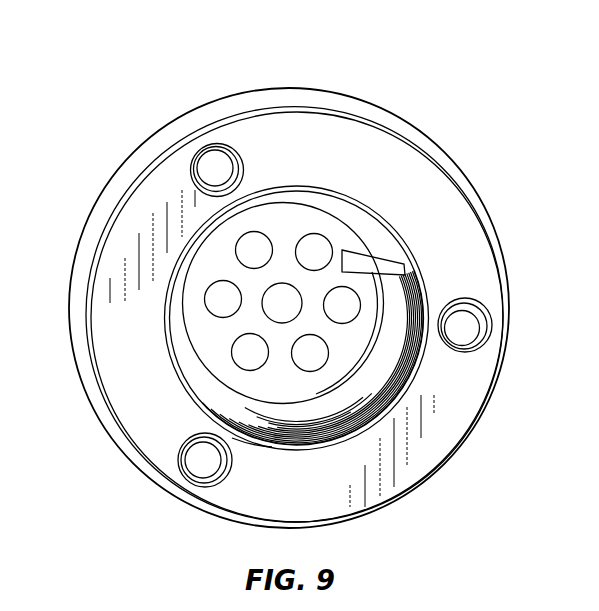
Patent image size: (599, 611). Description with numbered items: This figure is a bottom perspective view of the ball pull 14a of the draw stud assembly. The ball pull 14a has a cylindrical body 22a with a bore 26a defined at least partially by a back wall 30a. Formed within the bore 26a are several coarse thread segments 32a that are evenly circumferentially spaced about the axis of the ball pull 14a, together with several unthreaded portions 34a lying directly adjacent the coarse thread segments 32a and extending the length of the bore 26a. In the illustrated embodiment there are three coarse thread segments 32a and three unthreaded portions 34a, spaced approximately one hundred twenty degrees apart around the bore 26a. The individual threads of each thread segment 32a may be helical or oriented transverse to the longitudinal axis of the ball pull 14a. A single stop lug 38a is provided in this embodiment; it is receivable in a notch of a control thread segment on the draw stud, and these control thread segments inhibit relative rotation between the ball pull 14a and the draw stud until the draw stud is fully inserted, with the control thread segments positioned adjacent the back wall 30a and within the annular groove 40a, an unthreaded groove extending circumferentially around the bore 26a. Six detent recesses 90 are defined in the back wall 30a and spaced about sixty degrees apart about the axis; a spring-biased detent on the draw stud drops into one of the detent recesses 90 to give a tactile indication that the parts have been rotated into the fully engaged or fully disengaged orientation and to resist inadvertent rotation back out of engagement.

The ball pull 14a is at (181, 95).
The cylindrical body 22a is at (297, 98).
The bore 26a is at (422, 300).
The back wall 30a is at (217, 252).
The coarse thread segments 32a is at (350, 231).
The unthreaded portions 34a is at (251, 443).
The stop lug 38a is at (371, 260).
The annular groove 40a is at (226, 381).
The detent recesses 90 is at (227, 295).